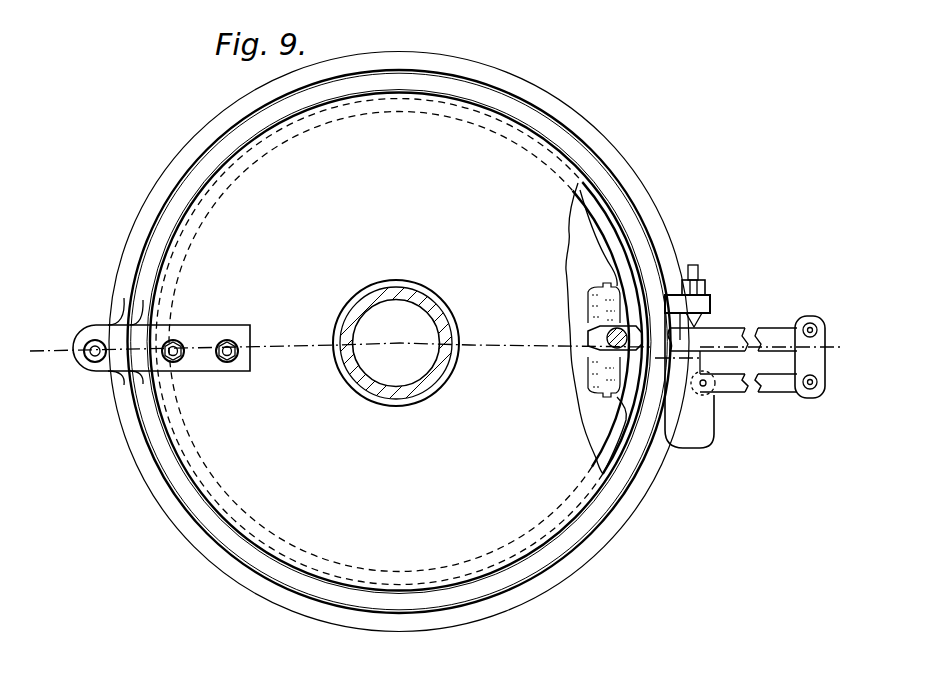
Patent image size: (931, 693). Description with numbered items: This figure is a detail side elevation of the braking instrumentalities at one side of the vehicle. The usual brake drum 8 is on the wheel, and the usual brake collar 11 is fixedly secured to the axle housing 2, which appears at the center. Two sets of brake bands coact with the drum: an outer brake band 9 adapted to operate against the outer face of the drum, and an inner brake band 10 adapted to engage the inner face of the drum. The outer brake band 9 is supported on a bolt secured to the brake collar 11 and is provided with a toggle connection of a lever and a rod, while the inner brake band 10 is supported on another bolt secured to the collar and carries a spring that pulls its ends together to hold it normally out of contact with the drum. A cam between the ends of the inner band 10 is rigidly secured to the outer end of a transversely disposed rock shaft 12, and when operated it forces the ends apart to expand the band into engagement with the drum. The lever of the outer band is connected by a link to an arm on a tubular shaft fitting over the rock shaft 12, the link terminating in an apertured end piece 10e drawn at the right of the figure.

The brake band 9 is at (132, 265).
The brake drum 8 is at (150, 276).
The brake collar 11 is at (399, 342).
The axle housing 2 is at (376, 392).
The brake band 10 is at (181, 298).
The rock shaft 12 is at (598, 342).
The end piece holes 10e is at (810, 392).